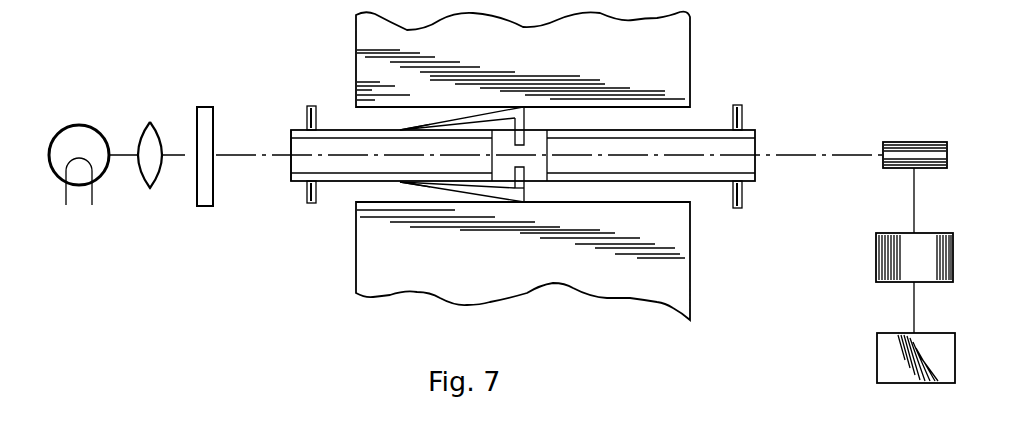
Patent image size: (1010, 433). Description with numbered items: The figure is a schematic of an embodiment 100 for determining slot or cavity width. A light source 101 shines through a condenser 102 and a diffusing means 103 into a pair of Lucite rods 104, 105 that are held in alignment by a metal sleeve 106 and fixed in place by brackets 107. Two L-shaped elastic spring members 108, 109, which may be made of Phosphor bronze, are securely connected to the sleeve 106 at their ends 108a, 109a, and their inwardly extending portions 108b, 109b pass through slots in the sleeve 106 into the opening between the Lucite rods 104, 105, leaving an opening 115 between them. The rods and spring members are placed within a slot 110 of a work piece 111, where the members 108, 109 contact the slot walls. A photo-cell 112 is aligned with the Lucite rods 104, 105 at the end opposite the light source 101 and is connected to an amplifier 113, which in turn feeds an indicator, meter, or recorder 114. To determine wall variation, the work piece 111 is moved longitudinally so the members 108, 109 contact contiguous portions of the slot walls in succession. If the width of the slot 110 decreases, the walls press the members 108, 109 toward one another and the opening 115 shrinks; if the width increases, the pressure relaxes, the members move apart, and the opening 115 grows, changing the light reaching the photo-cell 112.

The embodiment 100 is at (292, 183).
The light source 101 is at (70, 138).
The condenser 102 is at (152, 138).
The diffusing means 103 is at (202, 113).
The Lucite rod 104 is at (300, 148).
The Lucite rod 105 is at (690, 145).
The metal sleeve 106 is at (340, 128).
The brackets 107 is at (312, 107).
The L-shaped elastic spring member 108 is at (483, 113).
The end of spring member 108a is at (413, 130).
The inwardly extending portion 108b is at (525, 113).
The L-shaped elastic spring member 109 is at (500, 195).
The end of spring member 109a is at (407, 182).
The inwardly extending portion 109b is at (525, 188).
The slot 110 is at (682, 192).
The work piece 111 is at (680, 38).
The photo-cell 112 is at (937, 153).
The amplifier 113 is at (920, 240).
The indicator, meter, or recorder 114 is at (935, 340).
The opening 115 is at (520, 153).